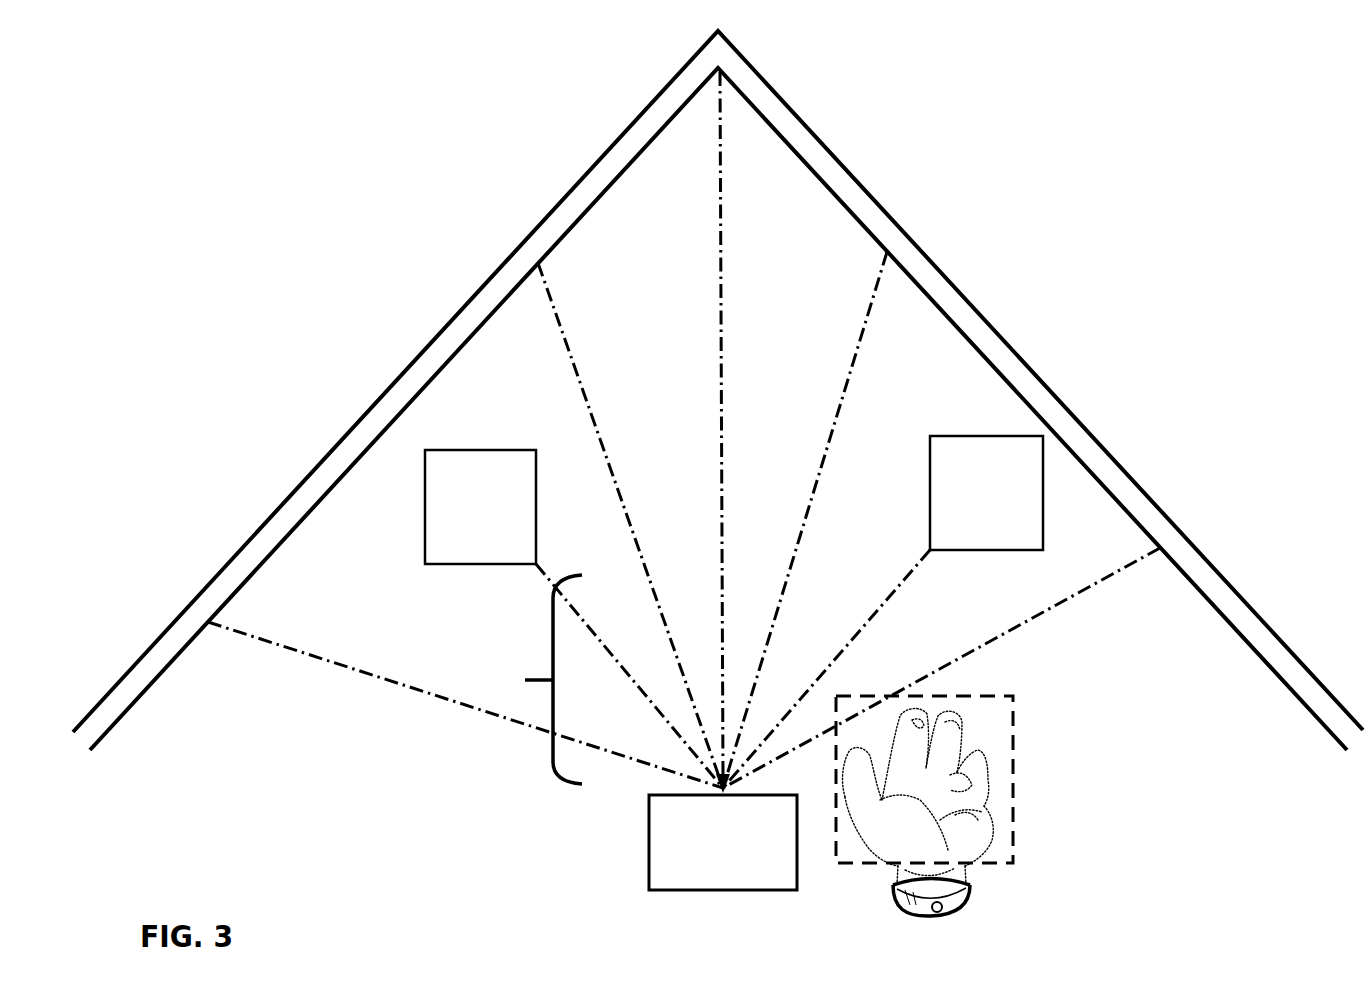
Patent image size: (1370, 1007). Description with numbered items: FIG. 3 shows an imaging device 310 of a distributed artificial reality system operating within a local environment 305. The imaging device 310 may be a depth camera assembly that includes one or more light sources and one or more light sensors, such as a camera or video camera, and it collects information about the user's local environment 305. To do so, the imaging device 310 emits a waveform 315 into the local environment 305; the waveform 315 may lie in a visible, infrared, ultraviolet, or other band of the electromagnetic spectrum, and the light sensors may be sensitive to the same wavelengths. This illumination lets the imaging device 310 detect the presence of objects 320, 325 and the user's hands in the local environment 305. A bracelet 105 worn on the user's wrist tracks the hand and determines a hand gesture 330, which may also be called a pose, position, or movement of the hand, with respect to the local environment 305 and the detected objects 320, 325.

The local environment 305 is at (855, 177).
The imaging device 310 is at (723, 842).
The waveform 315 is at (523, 680).
The object 320 is at (480, 507).
The object 325 is at (986, 493).
The hand gesture 330 is at (1015, 720).
The bracelet 105 is at (972, 898).